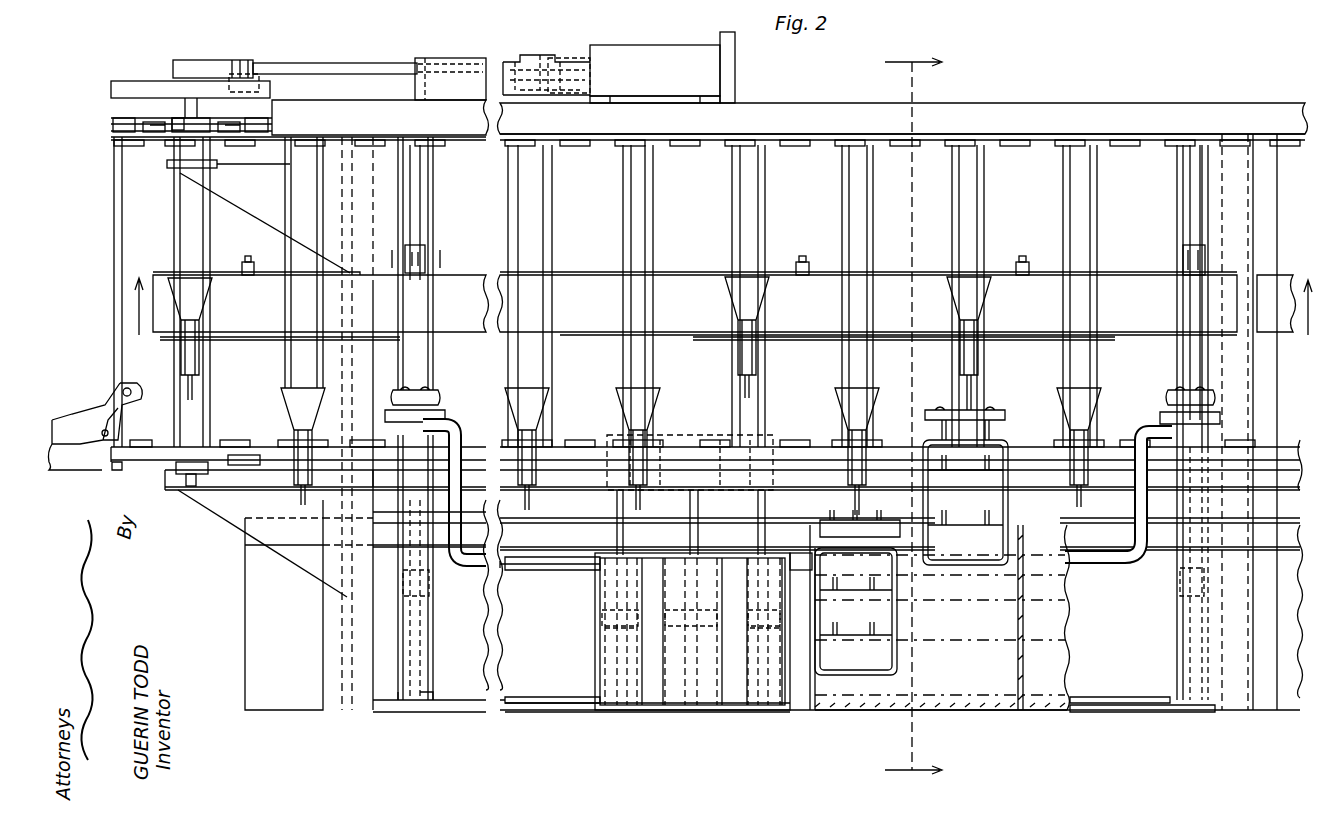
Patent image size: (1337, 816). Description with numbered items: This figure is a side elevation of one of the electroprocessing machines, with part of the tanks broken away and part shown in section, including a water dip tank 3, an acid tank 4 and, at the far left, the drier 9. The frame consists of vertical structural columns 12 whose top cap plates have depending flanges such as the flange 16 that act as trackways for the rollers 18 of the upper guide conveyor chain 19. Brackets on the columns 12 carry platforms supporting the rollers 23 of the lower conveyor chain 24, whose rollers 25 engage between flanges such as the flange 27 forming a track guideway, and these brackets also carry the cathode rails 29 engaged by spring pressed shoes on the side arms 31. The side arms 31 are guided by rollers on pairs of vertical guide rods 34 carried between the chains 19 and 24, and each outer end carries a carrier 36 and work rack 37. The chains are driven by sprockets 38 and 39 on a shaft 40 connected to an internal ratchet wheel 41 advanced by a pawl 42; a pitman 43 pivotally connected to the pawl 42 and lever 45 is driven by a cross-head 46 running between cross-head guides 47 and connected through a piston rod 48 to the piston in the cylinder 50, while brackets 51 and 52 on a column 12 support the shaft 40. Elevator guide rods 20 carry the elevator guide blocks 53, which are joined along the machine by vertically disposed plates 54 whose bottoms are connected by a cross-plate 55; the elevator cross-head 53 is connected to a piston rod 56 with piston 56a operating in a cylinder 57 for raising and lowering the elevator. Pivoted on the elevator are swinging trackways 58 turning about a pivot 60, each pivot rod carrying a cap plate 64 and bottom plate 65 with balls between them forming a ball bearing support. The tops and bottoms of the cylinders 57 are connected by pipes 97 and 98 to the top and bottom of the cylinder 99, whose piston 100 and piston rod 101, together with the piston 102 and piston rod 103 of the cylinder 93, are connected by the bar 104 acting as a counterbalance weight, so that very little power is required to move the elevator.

The water dip tank 3 is at (975, 725).
The acid tank 4 is at (1051, 686).
The drier 9 is at (258, 620).
The vertical structural column 12 is at (1268, 205).
The depending flange 16 is at (392, 118).
The roller 18 is at (175, 124).
The upper guide conveyor chain 19 is at (112, 128).
The vertical elevator guide 20 is at (410, 170).
The roller 23 is at (192, 475).
The lower conveyor chain 24 is at (112, 462).
The roller 25 is at (235, 452).
The flange 27 is at (560, 480).
The cathode rail 29 is at (469, 488).
The side arm 31 is at (294, 406).
The vertical guide rod 34 is at (112, 244).
The carrier 36 is at (738, 370).
The work rack 37 is at (1005, 510).
The sprocket 38 is at (158, 132).
The sprocket 39 is at (158, 458).
The shaft 40 is at (198, 108).
The internal ratchet wheel 41 is at (153, 80).
The pawl 42 is at (232, 72).
The pitman 43 is at (360, 65).
The lever 45 is at (196, 60).
The cross-head 46 is at (540, 56).
The cross-head guide 47 is at (462, 82).
The piston rod 48 is at (588, 62).
The cylinder 50 is at (680, 58).
The bracket 51 is at (262, 197).
The bracket 52 is at (245, 500).
The elevator guide block 53 is at (420, 260).
The vertically disposed plate 54 is at (584, 290).
The cross-plate 55 is at (705, 340).
The piston rod 56 is at (423, 398).
The piston 56a is at (424, 584).
The cylinder 57 is at (423, 634).
The elevator swinging trackway 58 is at (250, 340).
The pivot 60 is at (251, 262).
The cap plate 64 is at (244, 272).
The bottom plate 65 is at (256, 272).
The cylinder 93 is at (695, 690).
The pipe 97 is at (546, 563).
The pipe 98 is at (553, 698).
The cylinder 99 is at (623, 690).
The piston 100 is at (598, 635).
The piston rod 101 is at (626, 517).
The piston 102 is at (705, 633).
The piston rod 103 is at (704, 505).
The bar 104 is at (705, 439).